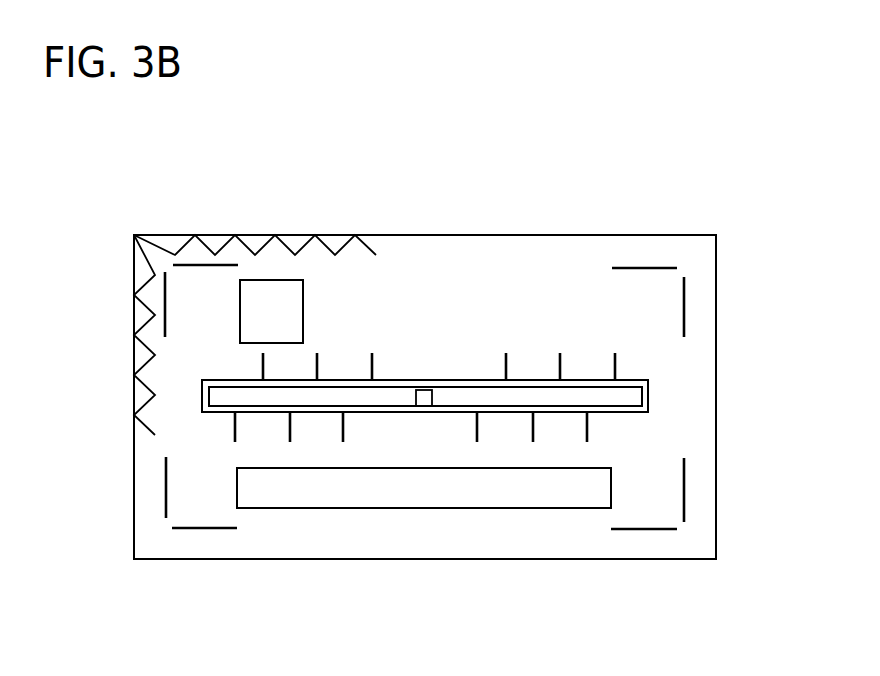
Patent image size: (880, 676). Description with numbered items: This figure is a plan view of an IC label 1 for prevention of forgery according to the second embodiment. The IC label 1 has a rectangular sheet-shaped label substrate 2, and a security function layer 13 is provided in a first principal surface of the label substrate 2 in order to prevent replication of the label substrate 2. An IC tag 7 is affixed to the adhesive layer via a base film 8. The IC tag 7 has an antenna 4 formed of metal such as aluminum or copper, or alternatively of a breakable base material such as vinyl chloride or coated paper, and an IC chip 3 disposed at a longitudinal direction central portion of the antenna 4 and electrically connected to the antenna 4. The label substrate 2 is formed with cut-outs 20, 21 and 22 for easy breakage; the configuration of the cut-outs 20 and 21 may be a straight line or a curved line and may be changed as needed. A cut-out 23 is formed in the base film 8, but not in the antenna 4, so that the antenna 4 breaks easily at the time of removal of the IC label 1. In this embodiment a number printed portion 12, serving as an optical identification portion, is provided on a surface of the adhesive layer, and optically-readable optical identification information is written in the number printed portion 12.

The IC label 1 is at (167, 221).
The label substrate 2 is at (672, 236).
The IC chip 3 is at (428, 393).
The antenna 4 is at (623, 403).
The IC tag 7 is at (657, 388).
The base film 8 is at (648, 400).
The number printed portion 12 is at (530, 502).
The security function layer 13 is at (290, 310).
The cut-out 20 is at (137, 278).
The cut-out 21 is at (687, 290).
The cut-out 22 is at (233, 432).
The cut-out 23 is at (232, 410).